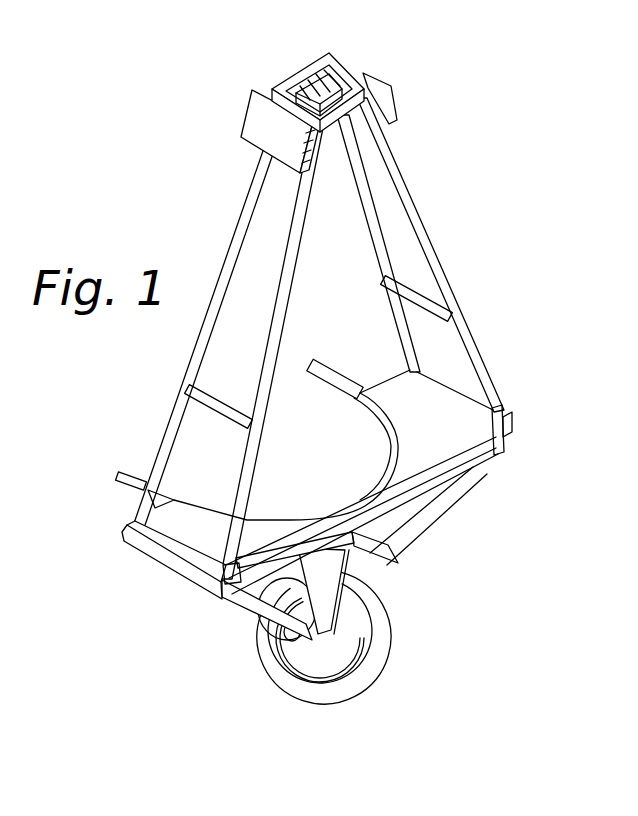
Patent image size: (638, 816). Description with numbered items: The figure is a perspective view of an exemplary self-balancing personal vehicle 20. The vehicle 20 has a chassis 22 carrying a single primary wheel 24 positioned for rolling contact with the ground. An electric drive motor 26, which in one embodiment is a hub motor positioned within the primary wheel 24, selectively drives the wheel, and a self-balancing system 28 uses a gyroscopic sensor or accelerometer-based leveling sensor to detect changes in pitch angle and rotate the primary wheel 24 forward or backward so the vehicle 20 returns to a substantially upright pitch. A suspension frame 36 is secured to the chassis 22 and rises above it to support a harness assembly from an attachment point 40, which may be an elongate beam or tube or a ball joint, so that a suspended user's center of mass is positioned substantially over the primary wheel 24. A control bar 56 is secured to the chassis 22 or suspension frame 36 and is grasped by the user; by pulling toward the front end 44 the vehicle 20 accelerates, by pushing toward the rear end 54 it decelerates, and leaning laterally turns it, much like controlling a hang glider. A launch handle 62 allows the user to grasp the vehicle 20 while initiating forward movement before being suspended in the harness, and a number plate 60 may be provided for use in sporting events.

The self-balancing personal vehicle 20 is at (454, 128).
The chassis 22 is at (166, 595).
The primary wheel 24 is at (370, 665).
The electric drive motor 26 is at (305, 653).
The self-balancing system 28 is at (364, 543).
The suspension frame 36 is at (420, 228).
The attachment point 40 is at (302, 88).
The front end 44 is at (467, 530).
The rear end 54 is at (305, 322).
The control bar 56 is at (477, 464).
The number plate 60 is at (252, 90).
The launch handle 62 is at (323, 377).